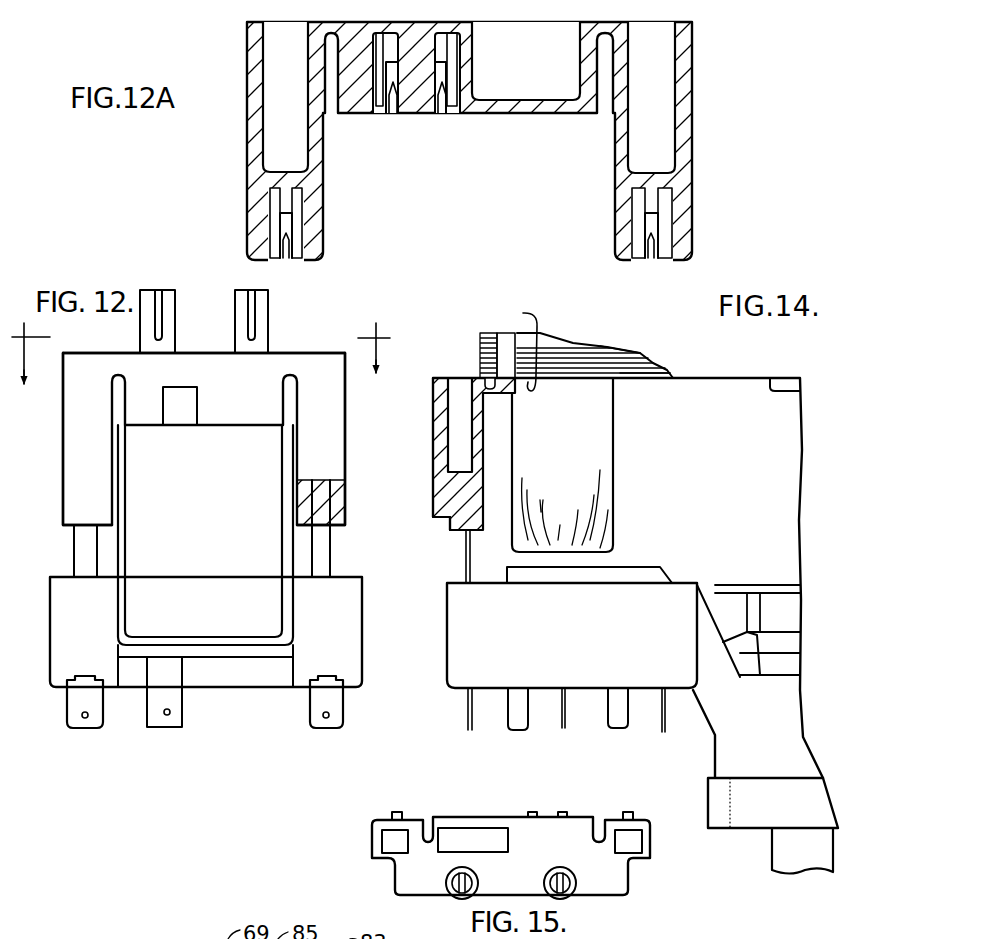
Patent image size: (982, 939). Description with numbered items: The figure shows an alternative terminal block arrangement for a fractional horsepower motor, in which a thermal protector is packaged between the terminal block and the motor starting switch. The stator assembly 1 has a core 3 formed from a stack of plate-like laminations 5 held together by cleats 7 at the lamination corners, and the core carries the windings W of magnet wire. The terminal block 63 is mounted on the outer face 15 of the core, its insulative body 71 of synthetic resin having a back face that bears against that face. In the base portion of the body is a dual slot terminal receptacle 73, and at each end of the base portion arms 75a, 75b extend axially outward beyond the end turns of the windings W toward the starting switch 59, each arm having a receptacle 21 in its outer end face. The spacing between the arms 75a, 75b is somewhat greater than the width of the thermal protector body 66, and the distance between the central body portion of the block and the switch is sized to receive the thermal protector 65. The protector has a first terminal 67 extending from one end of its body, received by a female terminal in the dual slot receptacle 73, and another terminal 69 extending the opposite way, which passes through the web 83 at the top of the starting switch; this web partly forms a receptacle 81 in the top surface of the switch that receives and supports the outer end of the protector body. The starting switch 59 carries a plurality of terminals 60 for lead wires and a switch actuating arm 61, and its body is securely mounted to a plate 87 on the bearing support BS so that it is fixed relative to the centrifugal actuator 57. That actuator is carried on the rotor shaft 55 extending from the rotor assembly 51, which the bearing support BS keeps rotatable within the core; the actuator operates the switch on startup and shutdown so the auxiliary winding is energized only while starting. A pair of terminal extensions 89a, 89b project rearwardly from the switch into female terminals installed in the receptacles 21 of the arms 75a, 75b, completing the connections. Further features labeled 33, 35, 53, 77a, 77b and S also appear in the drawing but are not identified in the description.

In FIG. 14, the stator assembly 1 is at (588, 332).
In FIG. 14, the core 3 is at (652, 360).
In FIG. 14, the laminations 5 is at (667, 371).
In FIG. 12A, the cleats 7 is at (583, 36).
In FIG. 12, the outer face 15 is at (204, 374).
In FIG. 14, the outer face 15 is at (520, 347).
In FIG. 12A, the receptacle 21 is at (290, 240).
In FIG. 15, the tab 33 is at (397, 811).
In FIG. 12A, the contact spring 35 is at (386, 65).
In FIG. 14, the rotor assembly 51 is at (752, 368).
In FIG. 14, the lug 53 is at (800, 392).
In FIG. 14, the rotor shaft 55 is at (773, 853).
In FIG. 14, the centrifugal actuator 57 is at (784, 658).
In FIG. 12, the motor starting switch 59 is at (47, 664).
In FIG. 14, the motor starting switch 59 is at (453, 692).
In FIG. 12, the terminals 60 is at (72, 723).
In FIG. 14, the switch actuating arm 61 is at (757, 677).
In FIG. 12A, the terminal block 63 is at (778, 12).
In FIG. 12, the terminal block 63 is at (60, 445).
In FIG. 14, the terminal block 63 is at (457, 454).
In FIG. 12, the thermal protector 65 is at (284, 494).
In FIG. 12, the thermal protector body 66 is at (235, 477).
In FIG. 12, the first terminal 67 is at (181, 403).
In FIG. 12, the terminal 69 is at (183, 728).
In FIG. 14, the terminal 69 is at (525, 729).
In FIG. 12, the insulative body 71 is at (313, 370).
In FIG. 15, the insulative body 71 is at (505, 816).
In FIG. 12A, the dual slot terminal receptacle 73 is at (404, 56).
In FIG. 12A, the arm 75a is at (248, 160).
In FIG. 12, the arm 75a is at (90, 480).
In FIG. 15, the arm 75a is at (650, 846).
In FIG. 12A, the arm 75b is at (688, 96).
In FIG. 12, the arm 75b is at (428, 428).
In FIG. 14, the arm 75b is at (448, 503).
In FIG. 15, the arm 75b is at (375, 866).
In FIG. 12, the post 77a is at (165, 291).
In FIG. 14, the post 77a is at (506, 343).
In FIG. 15, the post 77a is at (578, 896).
In FIG. 12, the post 77b is at (268, 323).
In FIG. 14, the post 77b is at (463, 412).
In FIG. 15, the post 77b is at (468, 896).
In FIG. 12, the receptacle 81 is at (290, 612).
In FIG. 12, the web 83 is at (263, 660).
In FIG. 14, the plate 87 is at (638, 574).
In FIG. 12, the terminal extension 89a is at (86, 554).
In FIG. 12, the terminal extension 89b is at (319, 566).
In FIG. 14, the bearing support BS is at (712, 758).
In FIG. 12A, the spring S is at (393, 107).
In FIG. 14, the windings W is at (510, 517).